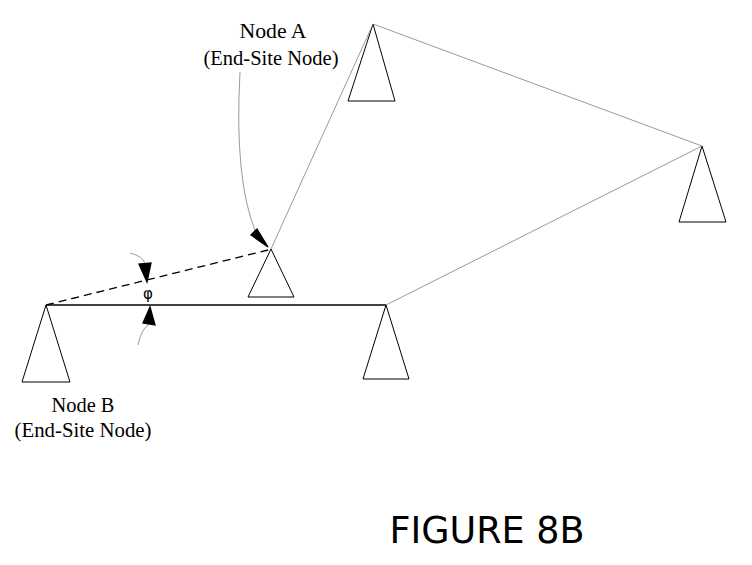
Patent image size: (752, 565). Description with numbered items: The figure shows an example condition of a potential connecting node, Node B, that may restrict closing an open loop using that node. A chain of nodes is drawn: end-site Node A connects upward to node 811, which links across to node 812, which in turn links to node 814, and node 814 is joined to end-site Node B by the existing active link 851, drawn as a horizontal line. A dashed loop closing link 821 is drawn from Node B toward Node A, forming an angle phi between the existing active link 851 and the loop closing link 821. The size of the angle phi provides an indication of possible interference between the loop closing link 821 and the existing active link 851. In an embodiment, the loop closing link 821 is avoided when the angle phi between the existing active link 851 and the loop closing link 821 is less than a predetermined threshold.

The node 811 (relay node) 811 is at (371, 79).
The node 812 (relay node) 812 is at (702, 199).
The node 814 (relay node) 814 is at (386, 357).
The loop closing link 821 is at (196, 269).
The existing active link 851 is at (272, 307).